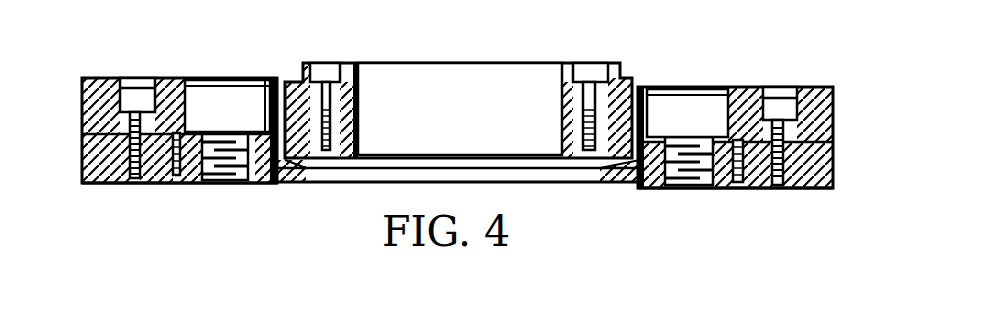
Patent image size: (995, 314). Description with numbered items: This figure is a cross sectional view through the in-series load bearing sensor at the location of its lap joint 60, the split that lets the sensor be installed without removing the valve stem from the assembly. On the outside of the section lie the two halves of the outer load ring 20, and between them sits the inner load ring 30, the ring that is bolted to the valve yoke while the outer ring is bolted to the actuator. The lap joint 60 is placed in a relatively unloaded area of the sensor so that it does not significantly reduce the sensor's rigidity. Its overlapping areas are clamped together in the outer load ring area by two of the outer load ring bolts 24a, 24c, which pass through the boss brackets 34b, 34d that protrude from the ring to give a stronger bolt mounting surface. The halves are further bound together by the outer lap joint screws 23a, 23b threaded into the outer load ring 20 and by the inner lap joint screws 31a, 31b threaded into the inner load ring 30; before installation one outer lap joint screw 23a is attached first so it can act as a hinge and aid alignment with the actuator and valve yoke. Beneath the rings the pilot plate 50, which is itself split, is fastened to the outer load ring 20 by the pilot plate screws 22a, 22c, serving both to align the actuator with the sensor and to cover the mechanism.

The outer load ring 20 is at (101, 78).
The lap joint 60 is at (84, 134).
The outer lap joint screw 23b is at (136, 78).
The outer lap joint screw 23a is at (780, 87).
The outer load ring bolt 24c is at (226, 78).
The outer load ring bolt 24a is at (686, 87).
The pilot plate screw 22c is at (178, 185).
The pilot plate screw 22a is at (737, 190).
The pilot plate 50 is at (266, 185).
The inner load ring 30 is at (351, 63).
The inner lap joint screw 31b is at (326, 63).
The inner lap joint screw 31a is at (588, 63).
The boss bracket 34d is at (322, 184).
The boss bracket 34b is at (584, 182).